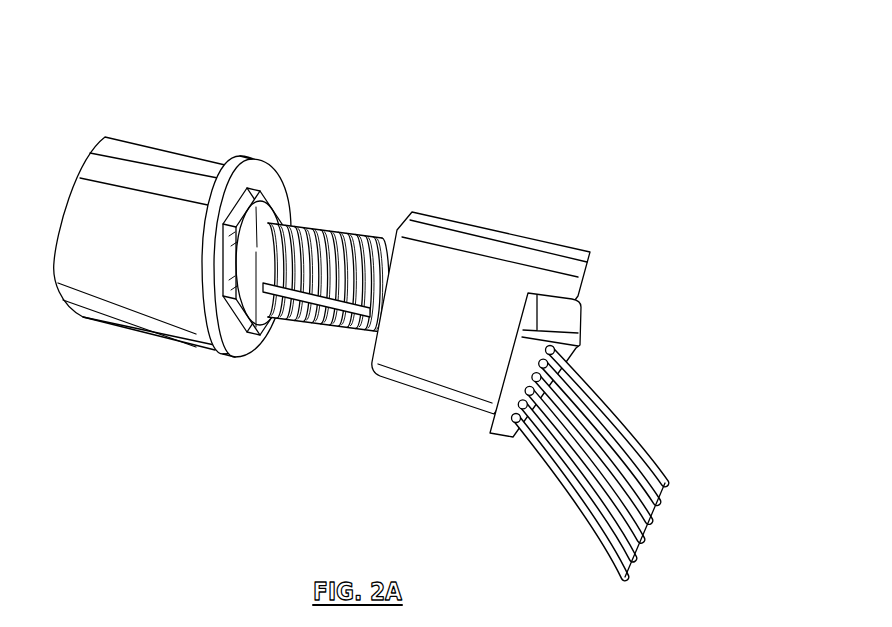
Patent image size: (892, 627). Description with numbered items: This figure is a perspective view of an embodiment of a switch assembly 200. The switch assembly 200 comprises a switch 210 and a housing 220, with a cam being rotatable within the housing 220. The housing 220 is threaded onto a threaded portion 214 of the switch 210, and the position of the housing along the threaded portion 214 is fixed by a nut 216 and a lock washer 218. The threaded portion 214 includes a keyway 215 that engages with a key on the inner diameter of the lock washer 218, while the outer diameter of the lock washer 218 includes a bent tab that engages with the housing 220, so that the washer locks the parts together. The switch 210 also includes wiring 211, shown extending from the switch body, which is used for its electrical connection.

The switch assembly 200 is at (387, 291).
The switch 210 is at (532, 253).
The wiring 211 is at (590, 409).
The threaded portion 214 is at (352, 230).
The keyway 215 is at (333, 337).
The nut 216 is at (292, 205).
The lock washer 218 is at (211, 352).
The housing 220 is at (100, 320).